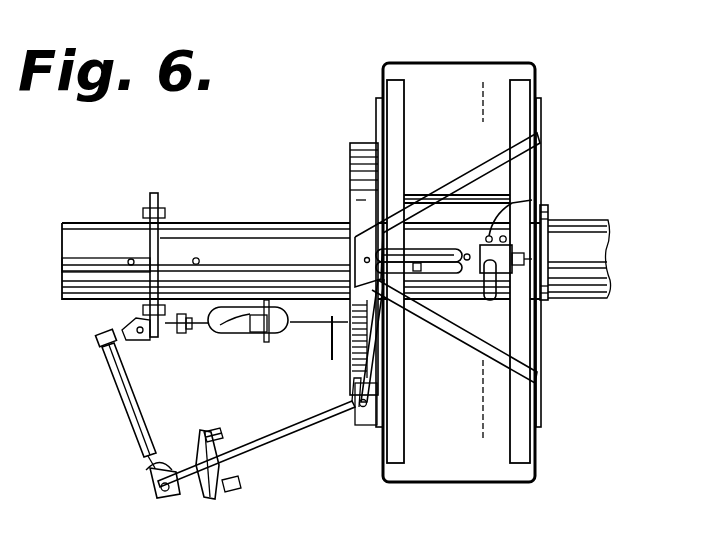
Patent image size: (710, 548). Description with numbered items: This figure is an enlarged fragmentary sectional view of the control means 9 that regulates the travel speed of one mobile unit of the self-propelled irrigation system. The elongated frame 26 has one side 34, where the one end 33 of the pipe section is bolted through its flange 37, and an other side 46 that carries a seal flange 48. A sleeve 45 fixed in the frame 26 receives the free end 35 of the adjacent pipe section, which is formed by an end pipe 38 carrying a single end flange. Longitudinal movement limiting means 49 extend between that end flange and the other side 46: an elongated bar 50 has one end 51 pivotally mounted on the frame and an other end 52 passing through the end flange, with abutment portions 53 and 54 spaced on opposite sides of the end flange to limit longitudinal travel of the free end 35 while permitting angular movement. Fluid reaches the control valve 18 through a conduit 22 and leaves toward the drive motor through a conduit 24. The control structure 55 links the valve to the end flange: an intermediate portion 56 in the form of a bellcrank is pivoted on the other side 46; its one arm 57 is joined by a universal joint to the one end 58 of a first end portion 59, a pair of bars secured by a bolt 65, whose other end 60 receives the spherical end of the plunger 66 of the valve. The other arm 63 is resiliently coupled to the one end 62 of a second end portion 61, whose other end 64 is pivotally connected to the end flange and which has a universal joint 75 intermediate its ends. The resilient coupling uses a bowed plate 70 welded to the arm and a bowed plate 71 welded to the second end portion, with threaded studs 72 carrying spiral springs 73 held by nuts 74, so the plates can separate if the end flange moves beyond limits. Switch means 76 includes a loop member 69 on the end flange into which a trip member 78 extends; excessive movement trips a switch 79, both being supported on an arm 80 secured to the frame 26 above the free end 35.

The control means 9 is at (256, 356).
The control valve 18 is at (485, 248).
The conduit 22 is at (512, 206).
The conduit 24 is at (546, 300).
The frame 26 is at (457, 272).
The one end 33 is at (609, 222).
The one side 34 is at (540, 325).
The free end 35 is at (301, 243).
The flange 37 is at (125, 252).
The end pipe 38 is at (280, 224).
The sleeve 45 is at (420, 196).
The other side 46 is at (341, 275).
The seal flange 48 is at (350, 146).
The longitudinal movement limiting means 49 is at (126, 259).
The elongated bar 50 is at (236, 240).
The one end 51 is at (350, 260).
The other end 52 is at (146, 176).
The abutment portion 53 is at (90, 257).
The abutment portion 54 is at (196, 257).
The control structure 55 is at (113, 413).
The intermediate portion 56 is at (259, 440).
The one arm 57 is at (370, 385).
The one end 58 is at (422, 245).
The first end portion 59 is at (436, 268).
The other end 60 is at (455, 265).
The second end portion 61 is at (130, 416).
The one end 62 is at (160, 489).
The other arm 63 is at (290, 428).
The other end 64 is at (96, 338).
The bolt 65 is at (414, 270).
The plunger 66 is at (472, 252).
The loop member 69 is at (256, 342).
The bowed plate 70 is at (212, 476).
The bowed plate 71 is at (224, 452).
The threaded stud 72 is at (241, 488).
The spiral spring 73 is at (202, 432).
The nut 74 is at (240, 483).
The universal joint 75 is at (147, 468).
The switch means 76 is at (284, 332).
The trip member 78 is at (245, 332).
The switch 79 is at (214, 330).
The arm 80 is at (319, 350).